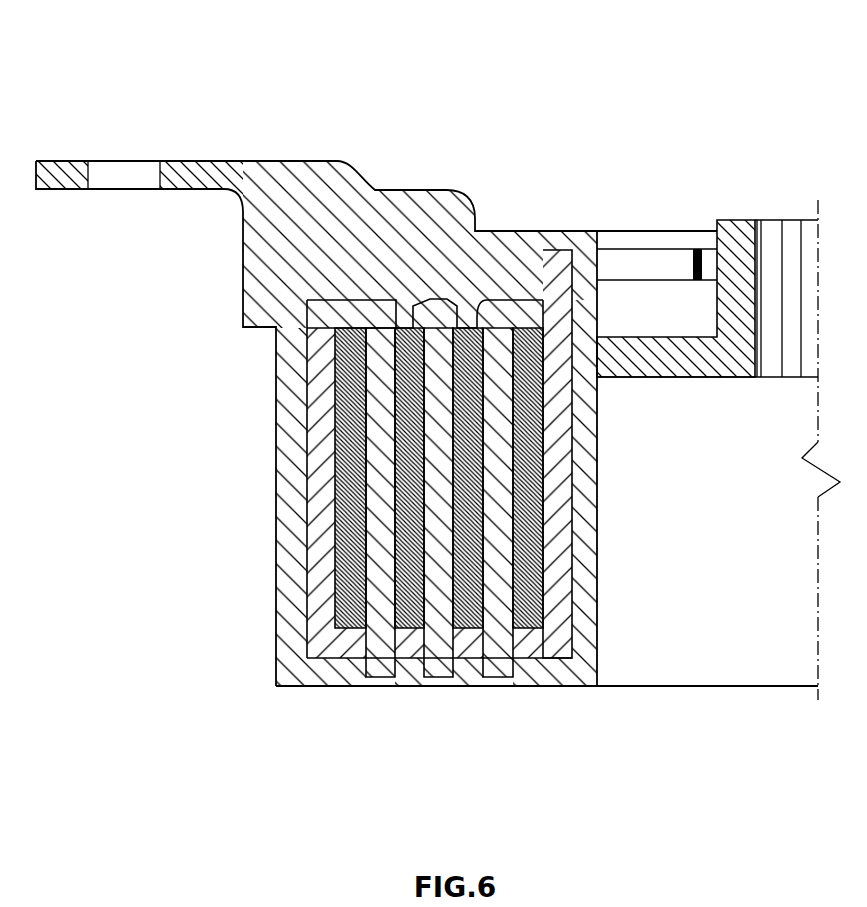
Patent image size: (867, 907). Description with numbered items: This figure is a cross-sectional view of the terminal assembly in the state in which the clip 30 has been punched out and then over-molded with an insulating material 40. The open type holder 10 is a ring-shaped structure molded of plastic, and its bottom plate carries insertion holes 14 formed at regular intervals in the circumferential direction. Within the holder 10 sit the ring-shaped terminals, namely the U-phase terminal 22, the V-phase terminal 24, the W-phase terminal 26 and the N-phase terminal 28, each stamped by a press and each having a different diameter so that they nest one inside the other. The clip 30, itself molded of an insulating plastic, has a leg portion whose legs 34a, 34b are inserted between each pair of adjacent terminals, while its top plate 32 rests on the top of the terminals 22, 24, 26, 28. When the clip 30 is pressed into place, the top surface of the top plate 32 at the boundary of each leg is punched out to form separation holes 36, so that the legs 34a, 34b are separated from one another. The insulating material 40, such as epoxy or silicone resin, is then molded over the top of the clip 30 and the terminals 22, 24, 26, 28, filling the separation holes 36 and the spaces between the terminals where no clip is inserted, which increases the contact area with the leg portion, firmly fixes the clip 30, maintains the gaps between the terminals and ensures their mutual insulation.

The open type holder 10 is at (302, 490).
The insertion holes 14 is at (340, 663).
The U-phase terminal 22 is at (325, 418).
The V-phase terminal 24 is at (345, 383).
The W-phase terminal 26 is at (470, 437).
The N-phase terminal 28 is at (583, 388).
The clip 30 is at (500, 290).
The top plate 32 is at (538, 293).
The leg 34a is at (493, 655).
The core leg 34b is at (378, 663).
The separation holes 36 is at (410, 303).
The insulating material 40 is at (337, 162).